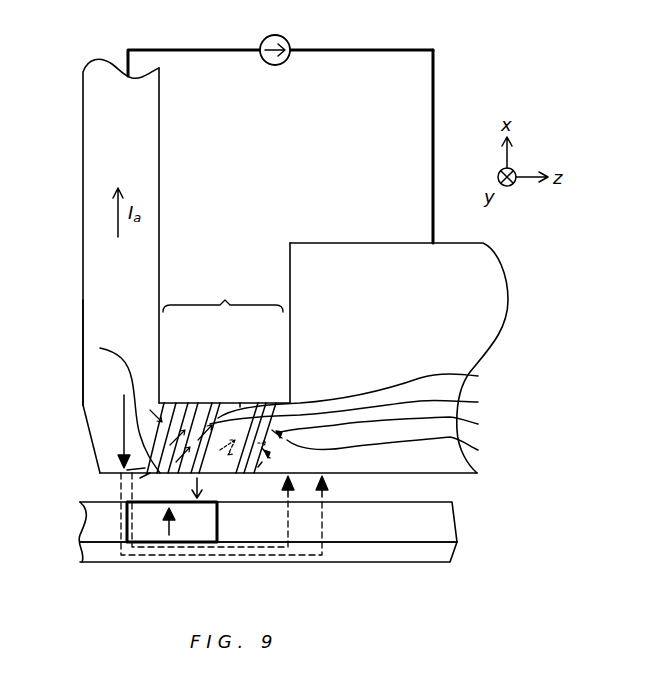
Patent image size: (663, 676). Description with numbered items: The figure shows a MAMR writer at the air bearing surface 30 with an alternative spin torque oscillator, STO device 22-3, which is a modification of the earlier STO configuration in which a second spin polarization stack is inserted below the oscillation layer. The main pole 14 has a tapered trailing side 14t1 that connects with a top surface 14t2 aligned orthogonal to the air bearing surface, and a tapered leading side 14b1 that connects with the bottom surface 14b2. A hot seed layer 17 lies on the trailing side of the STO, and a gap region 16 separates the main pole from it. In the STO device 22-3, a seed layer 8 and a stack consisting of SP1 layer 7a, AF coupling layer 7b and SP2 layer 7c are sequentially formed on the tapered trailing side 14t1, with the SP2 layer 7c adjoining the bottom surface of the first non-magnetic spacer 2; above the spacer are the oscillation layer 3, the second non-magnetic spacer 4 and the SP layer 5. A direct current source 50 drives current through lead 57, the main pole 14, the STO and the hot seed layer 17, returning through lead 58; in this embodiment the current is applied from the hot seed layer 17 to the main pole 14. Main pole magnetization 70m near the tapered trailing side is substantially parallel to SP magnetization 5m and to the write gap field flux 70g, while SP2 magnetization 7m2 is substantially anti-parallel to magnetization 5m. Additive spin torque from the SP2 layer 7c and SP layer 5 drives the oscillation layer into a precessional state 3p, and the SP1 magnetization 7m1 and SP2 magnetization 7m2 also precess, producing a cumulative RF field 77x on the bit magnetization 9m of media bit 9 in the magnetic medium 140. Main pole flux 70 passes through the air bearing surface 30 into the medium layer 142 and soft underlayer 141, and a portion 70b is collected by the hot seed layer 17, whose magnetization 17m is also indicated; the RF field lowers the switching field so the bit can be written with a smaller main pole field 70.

The lead 57 is at (167, 47).
The direct current source 50 is at (283, 37).
The lead 58 is at (435, 72).
The main pole 14 is at (83, 129).
The main pole top surface 14t2 is at (159, 132).
The nonmagnetic gap layer 16 is at (268, 243).
The hot seed layer 17 is at (490, 282).
The main pole bottom surface 14b2 is at (83, 318).
The STO device 22-3 is at (223, 294).
The main pole tapered trailing side 14t1 is at (100, 348).
The SP1 layer 7a is at (176, 403).
The SP2 layer 7c is at (198, 403).
The seed layer 8 is at (164, 403).
The AF coupling layer 7b is at (188, 403).
The first non-magnetic layer 2 is at (212, 403).
The oscillation layer 3 is at (240, 407).
The second non-magnetic layer 4 is at (258, 403).
The SP layer 5 is at (276, 403).
The SP2 layer magnetization 7m2 is at (369, 392).
The write gap field flux 70g is at (362, 408).
The precessional state 3p is at (391, 426).
The magnetization of trailing shield 17m is at (404, 448).
The air bearing surface 30 is at (97, 474).
The main pole magnetic field 70 is at (114, 431).
The main pole leading side 14b1 is at (92, 452).
The main pole magnetization 70m is at (127, 470).
The SP1 layer magnetization 7m1 is at (140, 478).
The cumulative RF field 77x is at (177, 489).
The SP layer magnetization 5m is at (258, 467).
The return flux portion 70b is at (288, 497).
The medium layer 142 is at (457, 522).
The soft underlayer 141 is at (450, 550).
The magnetic medium 140 is at (516, 500).
The bit magnetization 9m is at (167, 530).
The media bit 9 is at (192, 535).